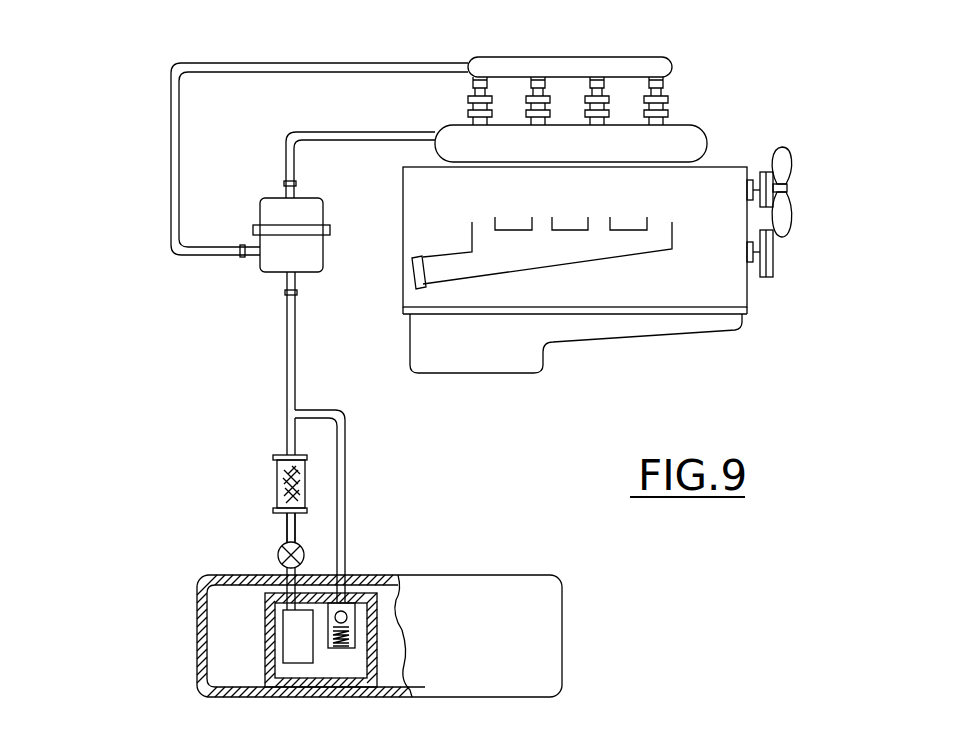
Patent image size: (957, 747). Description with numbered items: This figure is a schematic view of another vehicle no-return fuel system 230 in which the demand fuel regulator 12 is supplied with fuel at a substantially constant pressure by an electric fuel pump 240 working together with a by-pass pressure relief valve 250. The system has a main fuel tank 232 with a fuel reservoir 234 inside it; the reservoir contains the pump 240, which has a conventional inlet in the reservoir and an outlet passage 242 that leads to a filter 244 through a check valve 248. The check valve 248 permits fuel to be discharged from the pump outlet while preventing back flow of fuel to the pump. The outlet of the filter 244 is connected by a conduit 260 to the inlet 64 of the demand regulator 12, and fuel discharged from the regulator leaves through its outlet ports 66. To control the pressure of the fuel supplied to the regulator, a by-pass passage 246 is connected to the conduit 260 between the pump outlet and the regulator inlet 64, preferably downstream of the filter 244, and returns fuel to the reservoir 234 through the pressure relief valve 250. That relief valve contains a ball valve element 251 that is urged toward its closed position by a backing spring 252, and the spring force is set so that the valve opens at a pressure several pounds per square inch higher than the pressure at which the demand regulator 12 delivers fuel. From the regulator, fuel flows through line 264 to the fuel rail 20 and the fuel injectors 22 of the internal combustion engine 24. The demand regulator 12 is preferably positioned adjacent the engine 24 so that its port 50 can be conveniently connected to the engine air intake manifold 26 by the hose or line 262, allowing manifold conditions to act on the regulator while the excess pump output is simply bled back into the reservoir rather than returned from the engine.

The fuel rail 20 is at (646, 62).
The fuel injectors 22 is at (469, 99).
The air intake manifold 26 is at (706, 130).
The internal combustion engine 24 is at (628, 366).
The demand fuel regulator 12 is at (268, 272).
The port 50 is at (285, 188).
The inlet passage 64 is at (297, 285).
The outlet ports 66 is at (250, 247).
The no-return fuel system 230 is at (178, 30).
The main fuel tank 232 is at (515, 565).
The fuel reservoir 234 is at (265, 609).
The electric fuel pump 240 is at (292, 640).
The outlet passage 242 is at (284, 526).
The filter 244 is at (277, 478).
The by-pass passage 246 is at (347, 493).
The check valve 248 is at (279, 560).
The by-pass pressure relief valve 250 is at (356, 600).
The ball valve element 251 is at (348, 603).
The backing spring 252 is at (352, 635).
The conduit 260 is at (287, 345).
The hose or line 262 is at (350, 144).
The line 264 is at (170, 163).